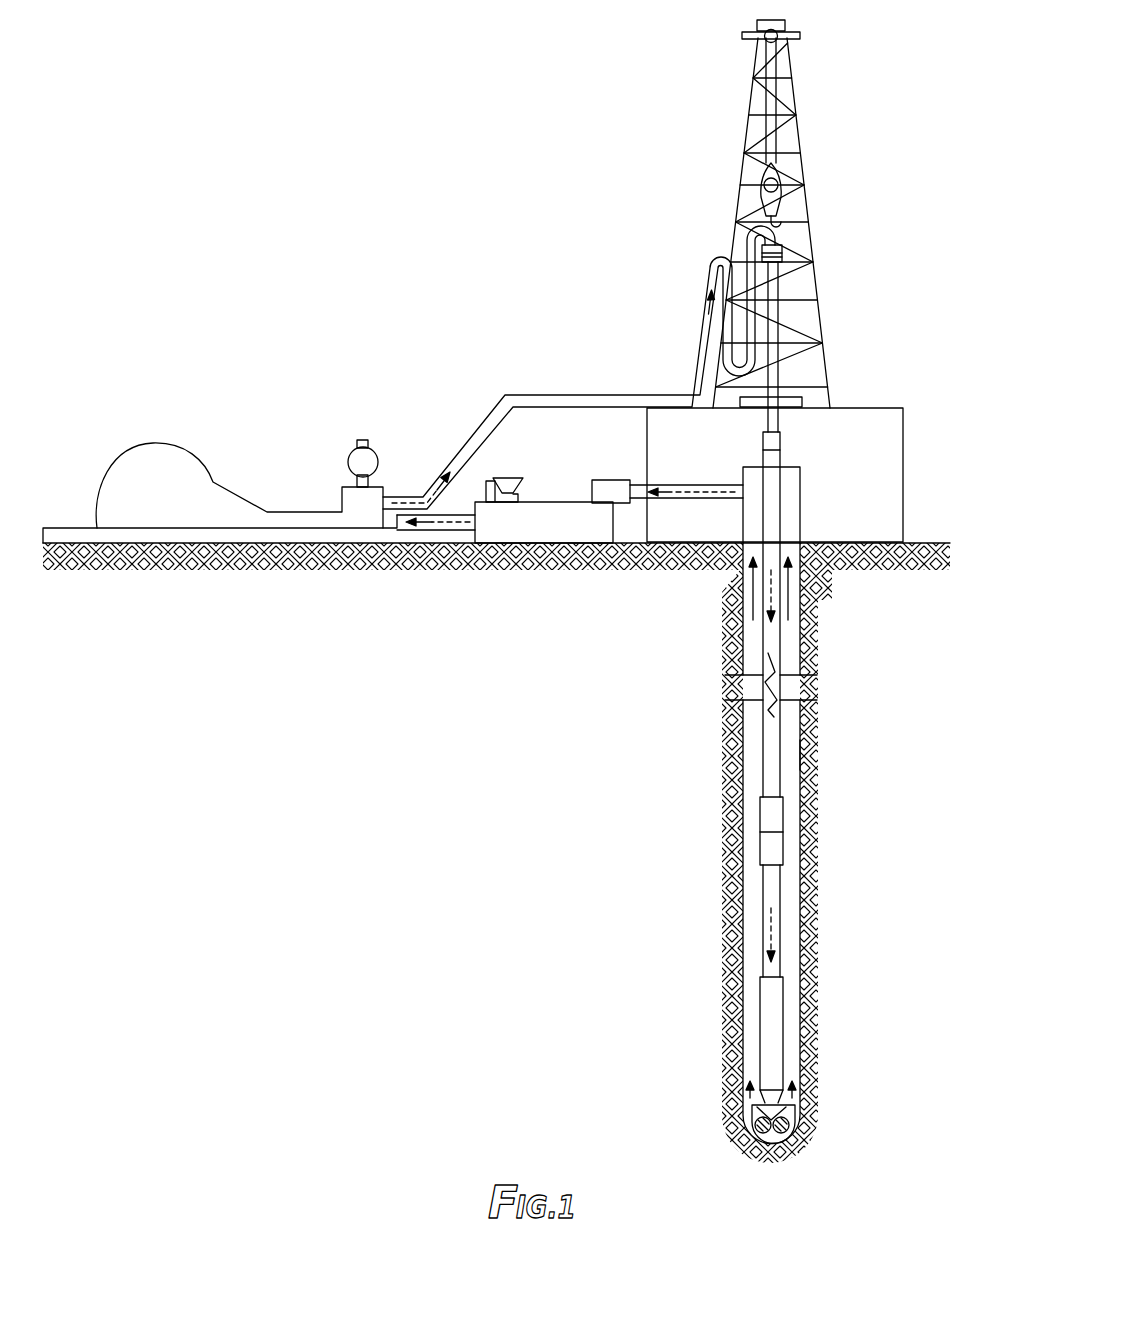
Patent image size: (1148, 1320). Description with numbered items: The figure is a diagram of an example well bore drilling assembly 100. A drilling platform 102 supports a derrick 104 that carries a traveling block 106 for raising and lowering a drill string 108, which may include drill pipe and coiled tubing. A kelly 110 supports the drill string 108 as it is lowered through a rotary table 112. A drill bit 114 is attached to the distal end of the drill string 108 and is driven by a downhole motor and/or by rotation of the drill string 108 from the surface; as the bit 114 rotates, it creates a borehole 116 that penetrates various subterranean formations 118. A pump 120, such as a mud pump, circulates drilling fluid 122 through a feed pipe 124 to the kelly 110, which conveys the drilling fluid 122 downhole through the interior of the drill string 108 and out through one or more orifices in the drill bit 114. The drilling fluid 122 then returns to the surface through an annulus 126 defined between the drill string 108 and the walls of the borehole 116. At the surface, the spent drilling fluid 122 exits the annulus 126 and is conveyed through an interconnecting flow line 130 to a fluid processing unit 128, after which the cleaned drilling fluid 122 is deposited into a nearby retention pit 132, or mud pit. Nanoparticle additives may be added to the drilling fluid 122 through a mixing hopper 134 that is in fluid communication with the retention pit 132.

The drilling assembly 100 is at (468, 116).
The drilling platform 102 is at (904, 410).
The derrick 104 is at (802, 128).
The traveling block 106 is at (781, 175).
The drill string 108 is at (774, 652).
The kelly 110 is at (773, 311).
The rotary table 112 is at (802, 403).
The drill bit 114 is at (787, 1112).
The borehole 116 is at (800, 750).
The subterranean formations 118 is at (667, 805).
The pump 120 is at (182, 504).
The drilling fluid 122 is at (432, 485).
The feed pipe 124 is at (603, 394).
The annulus 126 is at (790, 1005).
The fluid processing unit 128 is at (626, 480).
The interconnecting flow line 130 is at (715, 499).
The retention pit 132 is at (558, 543).
The mixing hopper 134 is at (502, 477).